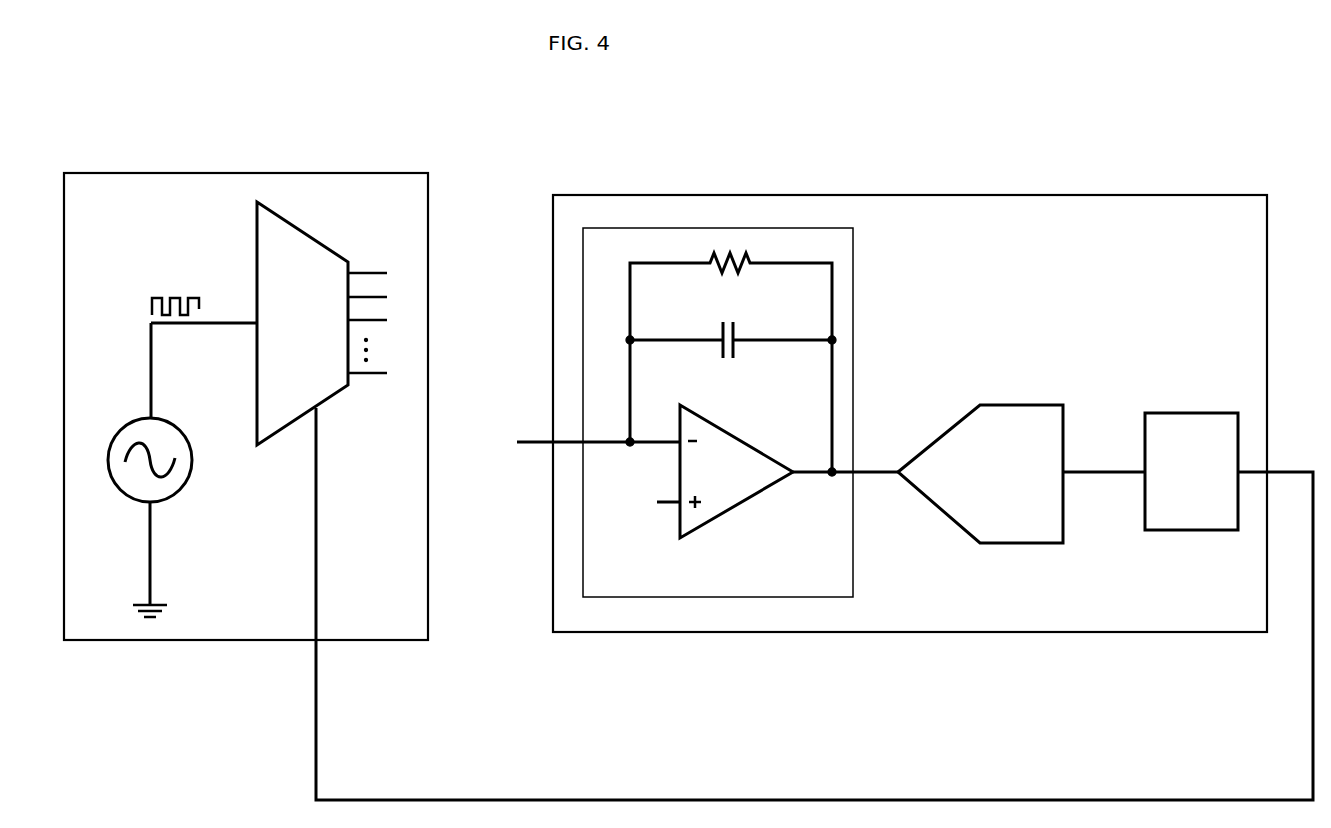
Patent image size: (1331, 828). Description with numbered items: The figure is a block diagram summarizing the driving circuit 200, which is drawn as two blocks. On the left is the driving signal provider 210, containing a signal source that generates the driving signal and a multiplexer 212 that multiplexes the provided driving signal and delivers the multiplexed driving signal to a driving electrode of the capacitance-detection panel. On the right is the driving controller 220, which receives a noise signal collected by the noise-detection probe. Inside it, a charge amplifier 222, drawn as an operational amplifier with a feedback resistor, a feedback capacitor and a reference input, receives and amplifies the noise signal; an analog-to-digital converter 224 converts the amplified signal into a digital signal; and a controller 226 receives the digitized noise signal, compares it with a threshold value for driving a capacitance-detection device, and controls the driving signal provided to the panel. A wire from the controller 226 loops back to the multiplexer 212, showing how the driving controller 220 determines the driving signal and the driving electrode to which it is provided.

The driving circuit 200 is at (135, 92).
The driving signal provider 210 is at (143, 229).
The multiplexer 212 is at (322, 323).
The driving controller 220 is at (1235, 239).
The charge amplifier 222 is at (740, 412).
The analog-to-digital converter 224 is at (1021, 474).
The controller 226 is at (1191, 471).